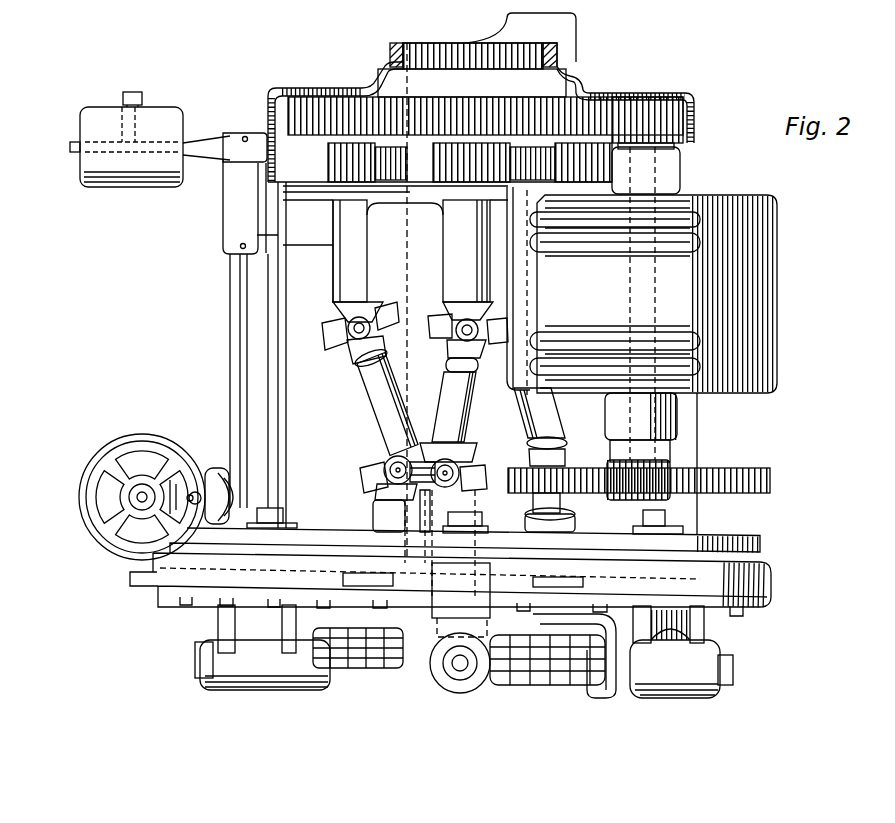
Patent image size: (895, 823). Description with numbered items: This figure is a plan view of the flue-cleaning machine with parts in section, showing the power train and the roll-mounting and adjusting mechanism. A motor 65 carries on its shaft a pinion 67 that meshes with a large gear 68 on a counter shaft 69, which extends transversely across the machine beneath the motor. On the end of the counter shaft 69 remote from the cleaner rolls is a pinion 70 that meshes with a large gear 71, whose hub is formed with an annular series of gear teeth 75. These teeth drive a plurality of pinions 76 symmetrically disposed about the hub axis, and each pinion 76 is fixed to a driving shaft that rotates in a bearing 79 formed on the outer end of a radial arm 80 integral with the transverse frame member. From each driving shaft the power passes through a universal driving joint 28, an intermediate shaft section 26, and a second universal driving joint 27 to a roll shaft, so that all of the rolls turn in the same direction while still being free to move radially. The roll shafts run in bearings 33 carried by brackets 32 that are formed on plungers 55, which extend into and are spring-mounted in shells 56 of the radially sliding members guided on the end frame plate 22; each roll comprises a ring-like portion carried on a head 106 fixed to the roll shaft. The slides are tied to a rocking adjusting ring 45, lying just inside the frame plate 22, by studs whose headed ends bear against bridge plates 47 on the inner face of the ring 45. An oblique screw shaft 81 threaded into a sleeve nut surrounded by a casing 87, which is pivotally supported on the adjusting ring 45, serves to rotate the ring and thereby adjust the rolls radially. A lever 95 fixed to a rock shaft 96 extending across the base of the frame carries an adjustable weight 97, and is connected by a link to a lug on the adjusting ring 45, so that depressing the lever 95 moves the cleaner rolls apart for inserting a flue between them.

The lever 95 is at (70, 146).
The weight 97 is at (148, 180).
The rock shaft 96 is at (237, 360).
The screw shaft 81 is at (140, 497).
The casing 87 is at (208, 467).
The large gear 71 is at (420, 115).
The pinion 70 is at (650, 108).
The counter shaft 69 is at (648, 149).
The pinions 76 is at (335, 158).
The gear teeth 75 is at (412, 172).
The bearings 79 is at (345, 265).
The radial arms 80 is at (405, 243).
The motor 65 is at (755, 287).
The pinion 67 is at (657, 478).
The large gear 68 is at (752, 494).
The bridge plates 47 is at (683, 535).
The adjusting ring 45 is at (762, 545).
The frame plate 22 is at (771, 573).
The brackets 32 is at (285, 617).
The plungers 55 is at (195, 653).
The shells 56 is at (282, 690).
The head 106 is at (360, 672).
The universal driving joint 28 is at (328, 345).
The intermediate shaft sections 26 is at (373, 413).
The universal driving joint 27 is at (360, 470).
The bearings 33 is at (383, 513).